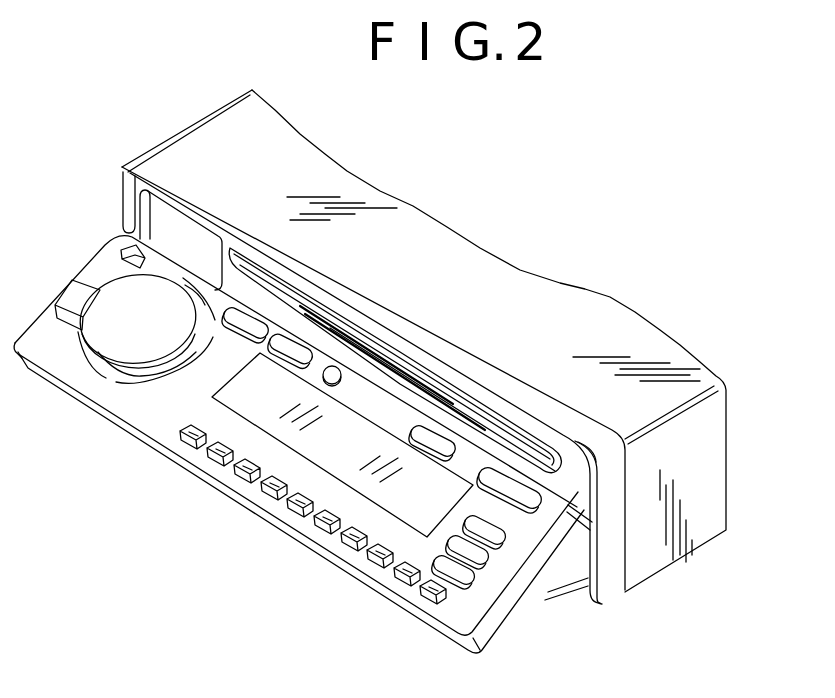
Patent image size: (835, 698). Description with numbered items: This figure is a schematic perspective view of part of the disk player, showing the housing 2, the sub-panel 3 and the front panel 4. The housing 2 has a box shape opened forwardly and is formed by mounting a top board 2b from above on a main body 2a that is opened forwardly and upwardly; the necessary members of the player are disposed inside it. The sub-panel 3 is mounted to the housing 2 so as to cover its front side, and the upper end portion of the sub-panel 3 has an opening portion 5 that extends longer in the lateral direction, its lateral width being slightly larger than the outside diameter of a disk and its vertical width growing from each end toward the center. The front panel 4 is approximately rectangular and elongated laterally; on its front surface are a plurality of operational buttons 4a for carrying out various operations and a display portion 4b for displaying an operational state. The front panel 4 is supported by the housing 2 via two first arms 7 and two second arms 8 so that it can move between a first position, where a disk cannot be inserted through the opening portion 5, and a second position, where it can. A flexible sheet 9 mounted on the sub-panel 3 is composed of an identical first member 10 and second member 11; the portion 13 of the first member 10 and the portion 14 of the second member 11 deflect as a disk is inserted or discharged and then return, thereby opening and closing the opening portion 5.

The housing 2 is at (448, 341).
The main body 2a is at (708, 434).
The top board 2b is at (655, 353).
The sub-panel 3 is at (429, 402).
The front panel 4 is at (300, 461).
The operational buttons 4a is at (247, 327).
The display portion 4b is at (213, 397).
The opening portion 5 is at (606, 450).
The first arms 7 is at (587, 520).
The second arms 8 is at (560, 607).
The sheet 9 is at (401, 295).
The first member 10 is at (447, 385).
The second member 11 is at (340, 327).
The portion 13 is at (318, 292).
The portion 14 is at (466, 412).